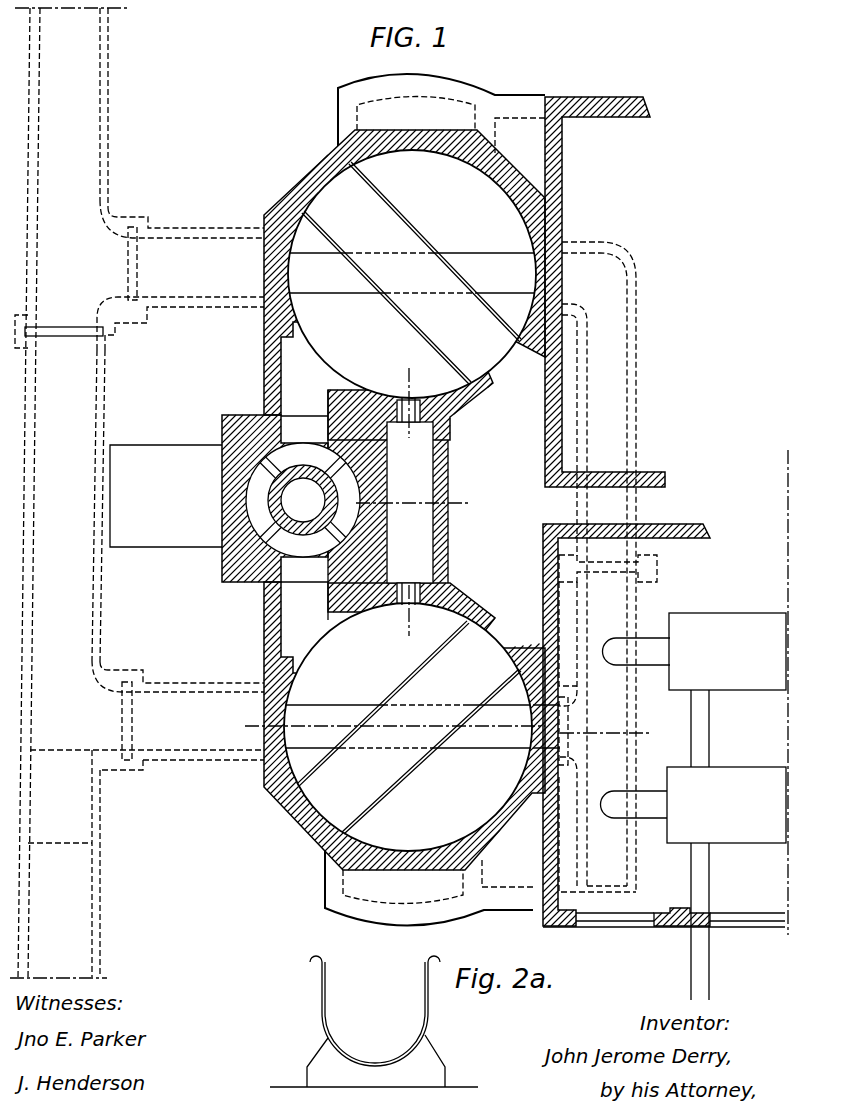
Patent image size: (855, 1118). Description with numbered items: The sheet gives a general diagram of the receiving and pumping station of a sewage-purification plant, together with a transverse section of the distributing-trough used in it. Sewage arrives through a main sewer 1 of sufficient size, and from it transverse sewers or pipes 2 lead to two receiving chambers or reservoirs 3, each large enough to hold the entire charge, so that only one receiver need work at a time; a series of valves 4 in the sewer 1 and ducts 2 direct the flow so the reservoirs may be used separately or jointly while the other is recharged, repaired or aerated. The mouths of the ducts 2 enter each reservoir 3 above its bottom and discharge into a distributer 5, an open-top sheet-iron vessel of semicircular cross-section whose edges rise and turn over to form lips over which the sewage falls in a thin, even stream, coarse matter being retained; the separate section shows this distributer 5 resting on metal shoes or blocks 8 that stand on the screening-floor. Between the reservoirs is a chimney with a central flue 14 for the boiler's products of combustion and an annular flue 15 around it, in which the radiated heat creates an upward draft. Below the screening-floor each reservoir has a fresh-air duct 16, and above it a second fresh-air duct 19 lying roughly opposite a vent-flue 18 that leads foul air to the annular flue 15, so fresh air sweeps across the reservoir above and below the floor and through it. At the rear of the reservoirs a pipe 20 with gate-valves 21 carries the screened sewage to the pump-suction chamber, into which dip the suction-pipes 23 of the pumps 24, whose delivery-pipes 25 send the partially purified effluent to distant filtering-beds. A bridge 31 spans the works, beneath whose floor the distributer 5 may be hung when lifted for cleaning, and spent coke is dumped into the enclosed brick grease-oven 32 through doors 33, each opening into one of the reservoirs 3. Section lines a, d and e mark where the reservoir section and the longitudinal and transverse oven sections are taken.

In FIG. 1, the sewer 1 is at (70, 493).
In FIG. 1, the transverse sewers or pipes 2 is at (147, 485).
In FIG. 1, the receiving chambers or reservoirs 3 is at (404, 500).
In FIG. 1, the valves 4 is at (81, 493).
In FIG. 1, the distributer 5 is at (384, 498).
In FIG. 2a, the distributer 5 is at (370, 1011).
In FIG. 2a, the metal shoes or blocks 8 is at (374, 1061).
In FIG. 1, the central flue 14 is at (235, 498).
In FIG. 1, the annular flue 15 is at (303, 501).
In FIG. 1, the fresh-air duct 16 is at (435, 499).
In FIG. 1, the vent-flue 18 is at (304, 500).
In FIG. 1, the second fresh-air duct 19 is at (513, 502).
In FIG. 1, the pipe 20 is at (584, 567).
In FIG. 1, the gate-valves 21 is at (608, 660).
In FIG. 1, the suction-pipes 23 is at (636, 728).
In FIG. 1, the pumps 24 is at (727, 692).
In FIG. 1, the delivery-pipes 25 is at (698, 845).
In FIG. 1, the bridge 31 is at (431, 498).
In FIG. 1, the grease-oven 32 is at (386, 505).
In FIG. 1, the doors 33 is at (405, 501).
In FIG. 1, the section line a a is at (444, 729).
In FIG. 1, the section line d d is at (409, 503).
In FIG. 1, the section line e e is at (412, 503).